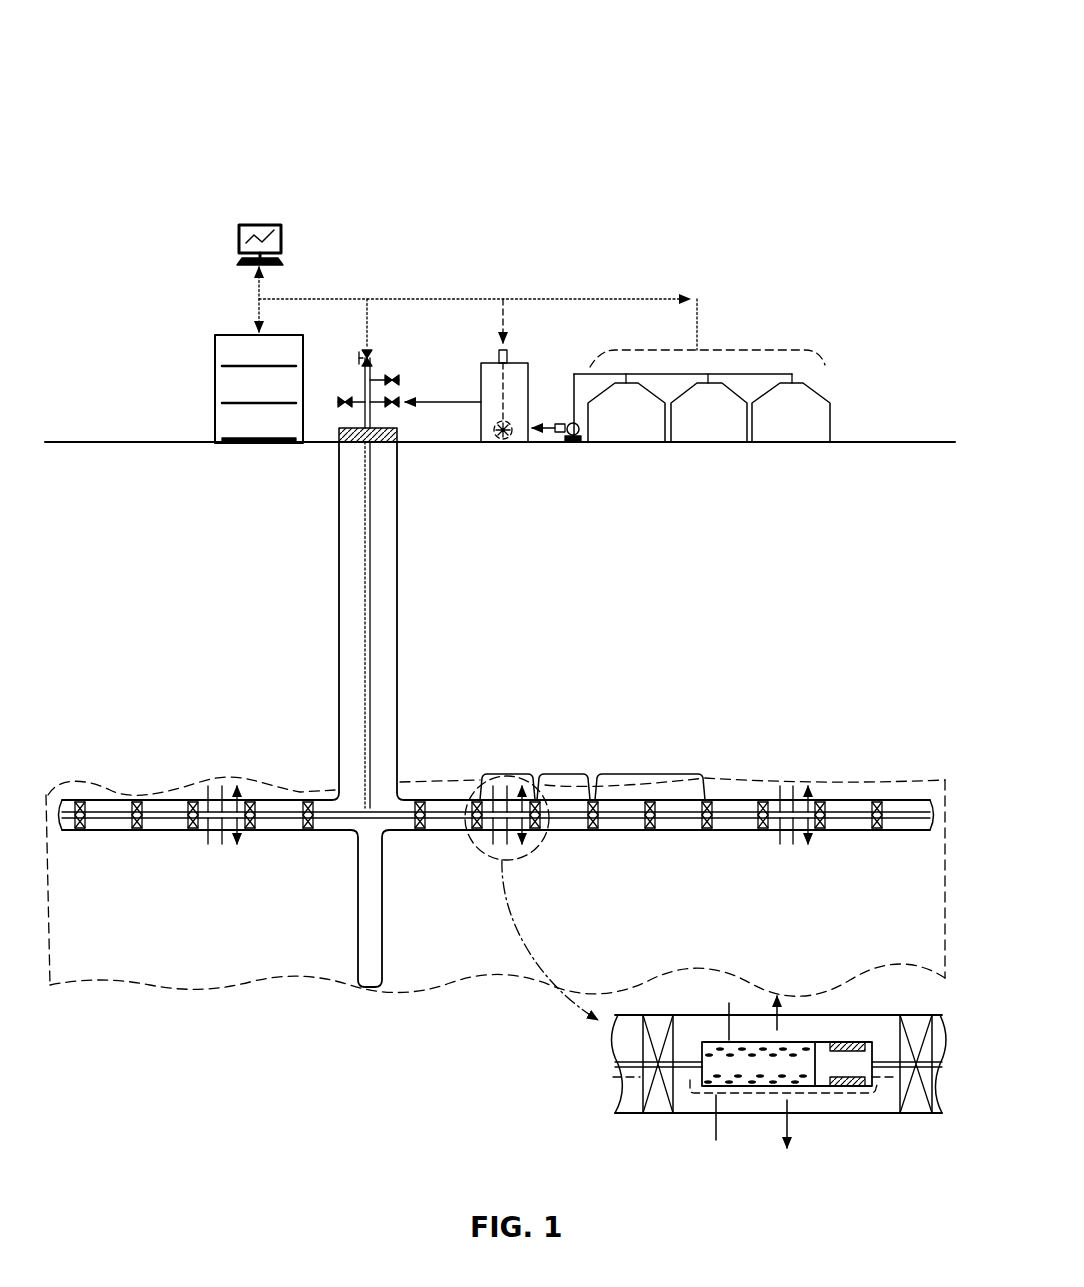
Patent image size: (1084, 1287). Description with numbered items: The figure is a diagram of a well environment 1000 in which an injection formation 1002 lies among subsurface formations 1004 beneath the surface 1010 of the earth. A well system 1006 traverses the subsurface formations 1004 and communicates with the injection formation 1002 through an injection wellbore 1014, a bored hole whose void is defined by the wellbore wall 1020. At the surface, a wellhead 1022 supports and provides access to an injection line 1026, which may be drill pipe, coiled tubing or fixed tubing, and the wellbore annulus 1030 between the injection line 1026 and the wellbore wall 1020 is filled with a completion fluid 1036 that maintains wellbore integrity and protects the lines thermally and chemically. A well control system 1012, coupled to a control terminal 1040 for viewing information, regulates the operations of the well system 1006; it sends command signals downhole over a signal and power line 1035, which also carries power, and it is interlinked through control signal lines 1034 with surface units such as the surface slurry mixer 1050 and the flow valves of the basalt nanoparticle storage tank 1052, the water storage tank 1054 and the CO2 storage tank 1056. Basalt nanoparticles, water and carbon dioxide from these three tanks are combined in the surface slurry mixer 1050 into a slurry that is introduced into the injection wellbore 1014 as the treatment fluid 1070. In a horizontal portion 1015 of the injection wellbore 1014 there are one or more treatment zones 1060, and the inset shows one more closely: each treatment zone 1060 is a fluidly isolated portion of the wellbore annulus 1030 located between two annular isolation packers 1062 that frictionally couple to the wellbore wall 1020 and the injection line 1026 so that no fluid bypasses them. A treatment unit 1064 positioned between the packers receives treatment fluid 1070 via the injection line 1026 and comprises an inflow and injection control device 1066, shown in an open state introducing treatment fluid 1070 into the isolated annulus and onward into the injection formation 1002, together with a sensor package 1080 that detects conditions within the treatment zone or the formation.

The well environment 1000 is at (142, 28).
The injection formation 1002 is at (150, 950).
The subsurface formations 1004 is at (800, 647).
The well system 1006 is at (228, 118).
The surface 1010 is at (136, 440).
The well control system 1012 is at (234, 333).
The injection wellbore 1014 is at (418, 628).
The horizontal portion 1015 is at (355, 845).
The wellbore wall 1020 is at (397, 595).
The wellhead 1022 is at (349, 386).
The injection line 1026 is at (369, 566).
The wellbore annulus 1030 is at (347, 688).
The signal and power line 1034 is at (688, 267).
The signal and power line 1035 is at (352, 556).
The completion fluid 1036 is at (382, 515).
The control terminal 1040 is at (262, 222).
The surface slurry mixer 1050 is at (522, 353).
The basalt nanoparticle storage tank 1052 is at (597, 433).
The water storage tank 1054 is at (708, 433).
The CO2 storage tank 1056 is at (803, 433).
The treatment zone 1060 is at (480, 777).
The annular isolation packers 1062 is at (657, 1023).
The treatment unit 1064 is at (855, 808).
The inflow and injection control device 1066 is at (748, 1010).
The treatment fluid 1070 is at (546, 856).
The sensor package 1080 is at (823, 1043).